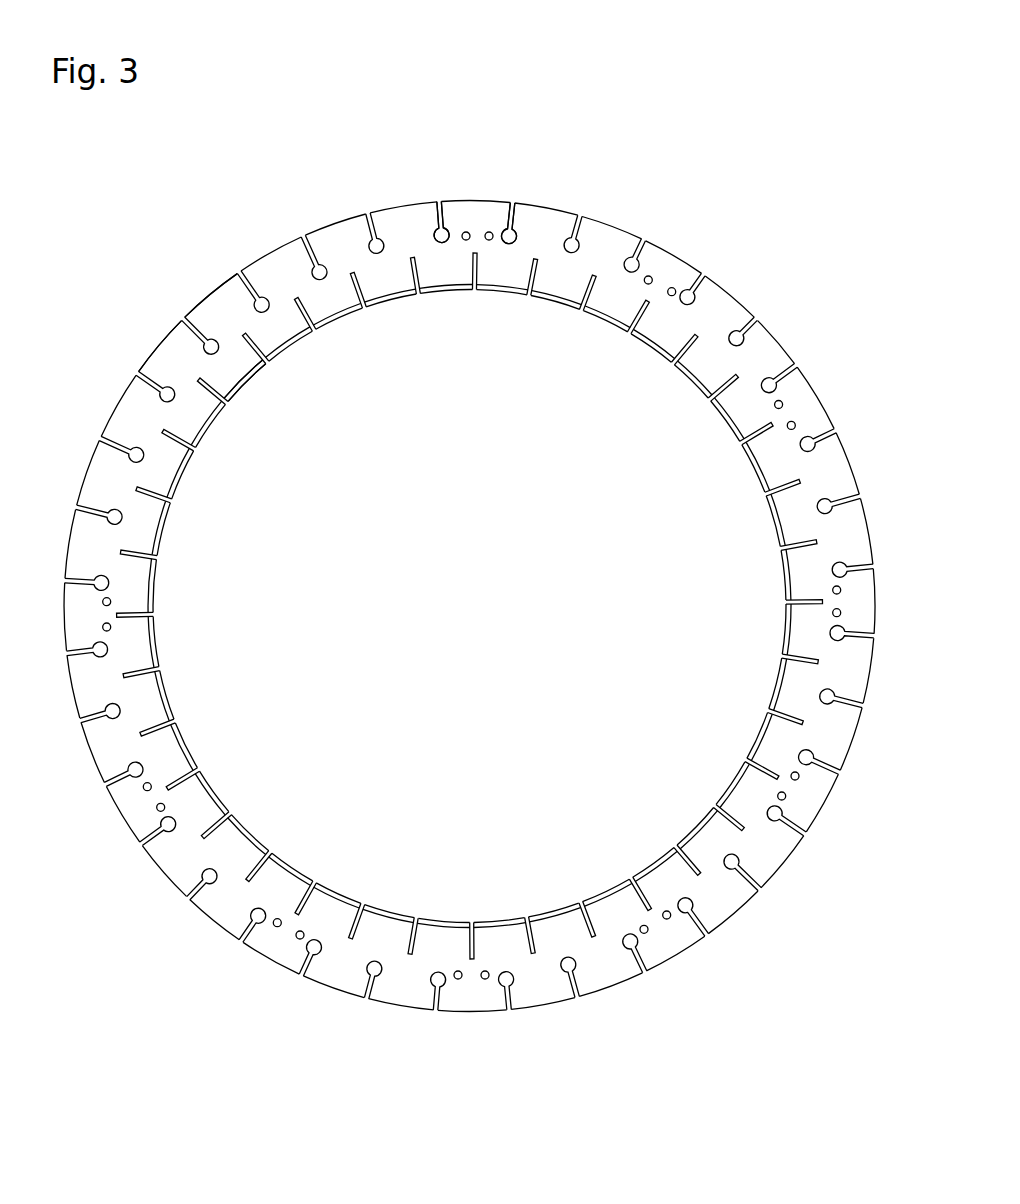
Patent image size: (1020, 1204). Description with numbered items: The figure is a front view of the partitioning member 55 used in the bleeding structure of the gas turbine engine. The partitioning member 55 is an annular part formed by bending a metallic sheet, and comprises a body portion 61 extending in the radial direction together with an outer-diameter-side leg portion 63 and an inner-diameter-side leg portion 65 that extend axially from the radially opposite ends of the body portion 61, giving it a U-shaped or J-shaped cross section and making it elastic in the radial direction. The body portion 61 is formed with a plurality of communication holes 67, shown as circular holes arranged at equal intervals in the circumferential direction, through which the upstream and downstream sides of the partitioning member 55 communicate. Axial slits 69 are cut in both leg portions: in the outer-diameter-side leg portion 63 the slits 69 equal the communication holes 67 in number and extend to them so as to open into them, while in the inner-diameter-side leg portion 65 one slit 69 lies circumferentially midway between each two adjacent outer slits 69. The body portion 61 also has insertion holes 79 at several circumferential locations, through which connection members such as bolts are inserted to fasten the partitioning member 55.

The partitioning member 55 is at (733, 290).
The body portion 61 is at (342, 257).
The outer-diameter-side leg portion 63 is at (213, 294).
The inner-diameter-side leg portion 65 is at (248, 387).
The communication hole 67 is at (506, 233).
The slit 69 is at (443, 231).
The insertion hole 79 is at (464, 241).